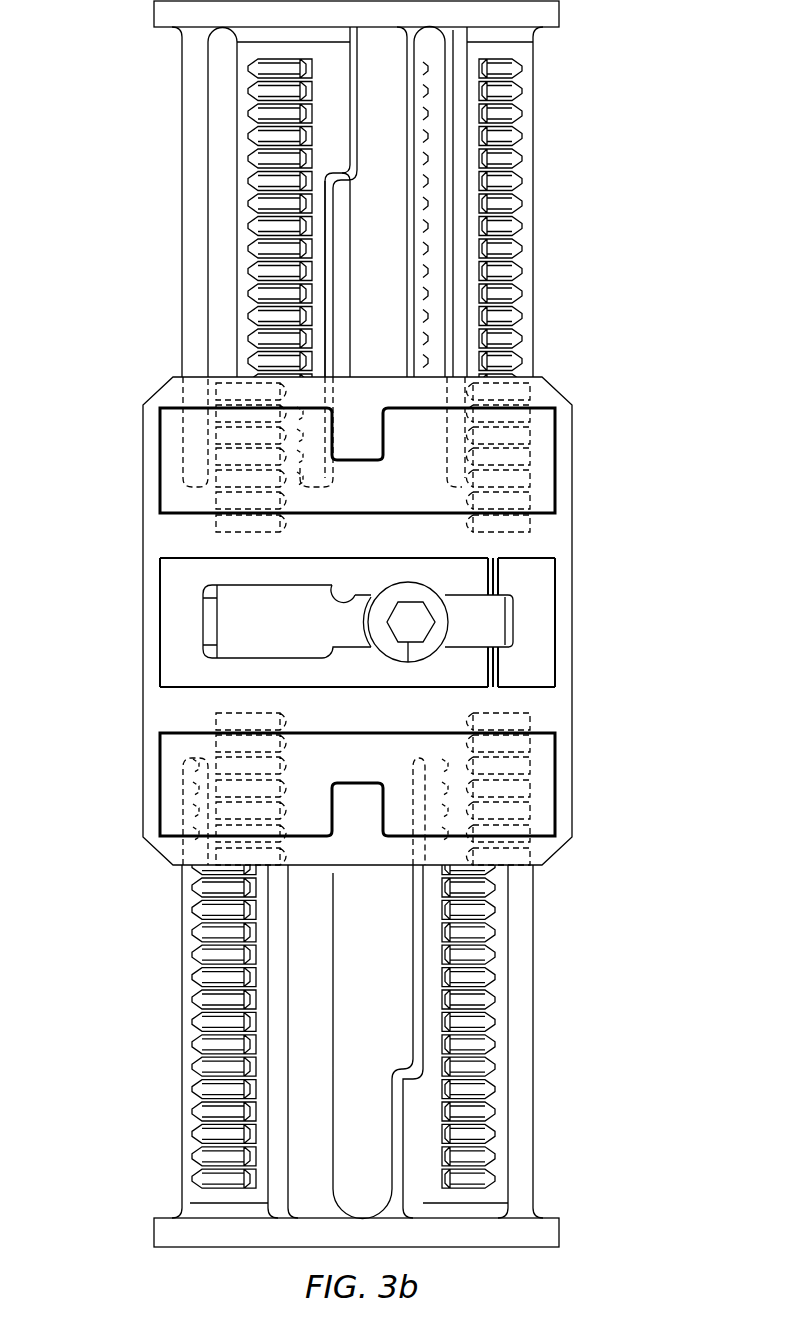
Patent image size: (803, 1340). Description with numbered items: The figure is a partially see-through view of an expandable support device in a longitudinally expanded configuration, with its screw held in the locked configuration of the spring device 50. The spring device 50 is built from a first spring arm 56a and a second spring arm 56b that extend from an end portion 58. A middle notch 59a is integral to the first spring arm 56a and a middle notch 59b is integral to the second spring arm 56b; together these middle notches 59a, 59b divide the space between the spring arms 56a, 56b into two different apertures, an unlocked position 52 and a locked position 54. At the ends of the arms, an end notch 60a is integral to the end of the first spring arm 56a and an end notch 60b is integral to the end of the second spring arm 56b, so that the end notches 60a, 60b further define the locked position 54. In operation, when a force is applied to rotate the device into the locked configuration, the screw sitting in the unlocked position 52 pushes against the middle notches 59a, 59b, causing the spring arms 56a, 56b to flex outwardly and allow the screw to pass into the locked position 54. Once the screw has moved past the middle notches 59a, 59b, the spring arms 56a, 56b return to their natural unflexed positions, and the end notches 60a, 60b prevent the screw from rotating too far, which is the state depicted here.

The spring device 50 is at (402, 545).
The unlocked position 52 is at (358, 624).
The locked position 54 is at (410, 643).
The first spring arm 56a is at (245, 573).
The second spring arm 56b is at (245, 673).
The end portion 58 is at (172, 610).
The middle notch 59a is at (334, 586).
The middle notch 59b is at (355, 643).
The end notch 60a is at (472, 578).
The end notch 60b is at (472, 667).